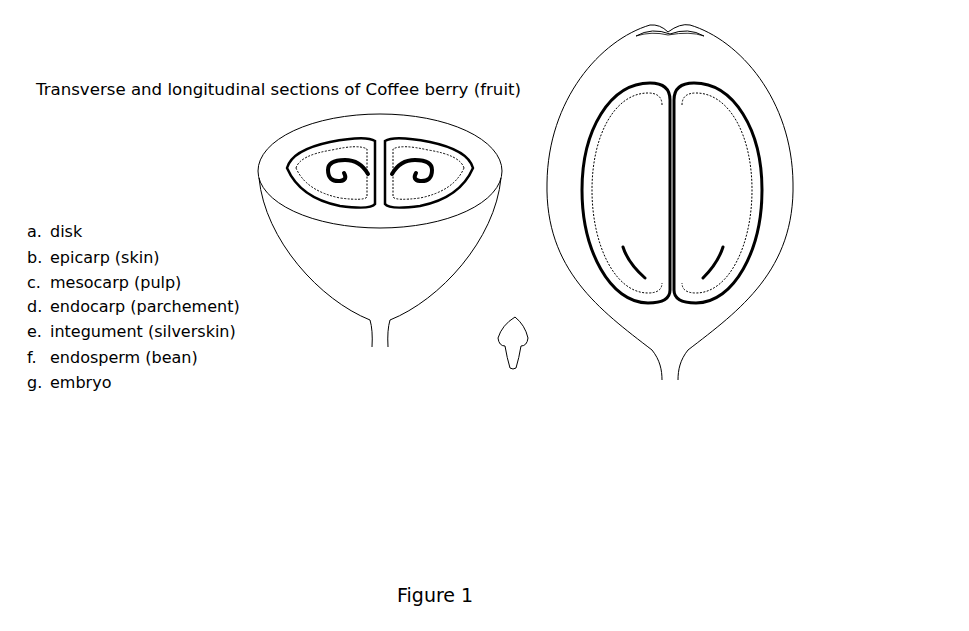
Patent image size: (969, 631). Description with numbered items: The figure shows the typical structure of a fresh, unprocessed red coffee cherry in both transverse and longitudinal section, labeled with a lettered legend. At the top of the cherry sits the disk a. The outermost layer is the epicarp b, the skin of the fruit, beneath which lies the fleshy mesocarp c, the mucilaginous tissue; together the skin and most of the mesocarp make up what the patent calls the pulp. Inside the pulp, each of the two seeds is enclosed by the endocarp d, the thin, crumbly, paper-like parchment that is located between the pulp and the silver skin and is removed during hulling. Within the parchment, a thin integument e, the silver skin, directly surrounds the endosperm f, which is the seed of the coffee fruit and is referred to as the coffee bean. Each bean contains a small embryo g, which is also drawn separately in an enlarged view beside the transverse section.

The disk a is at (670, 18).
The epicarp (skin) b is at (323, 123).
The mesocarp (pulp) c is at (275, 162).
The endocarp (parchment) d is at (332, 201).
The integument (silverskin) e is at (437, 150).
The endosperm (bean) f is at (415, 187).
The embryo g is at (795, 278).